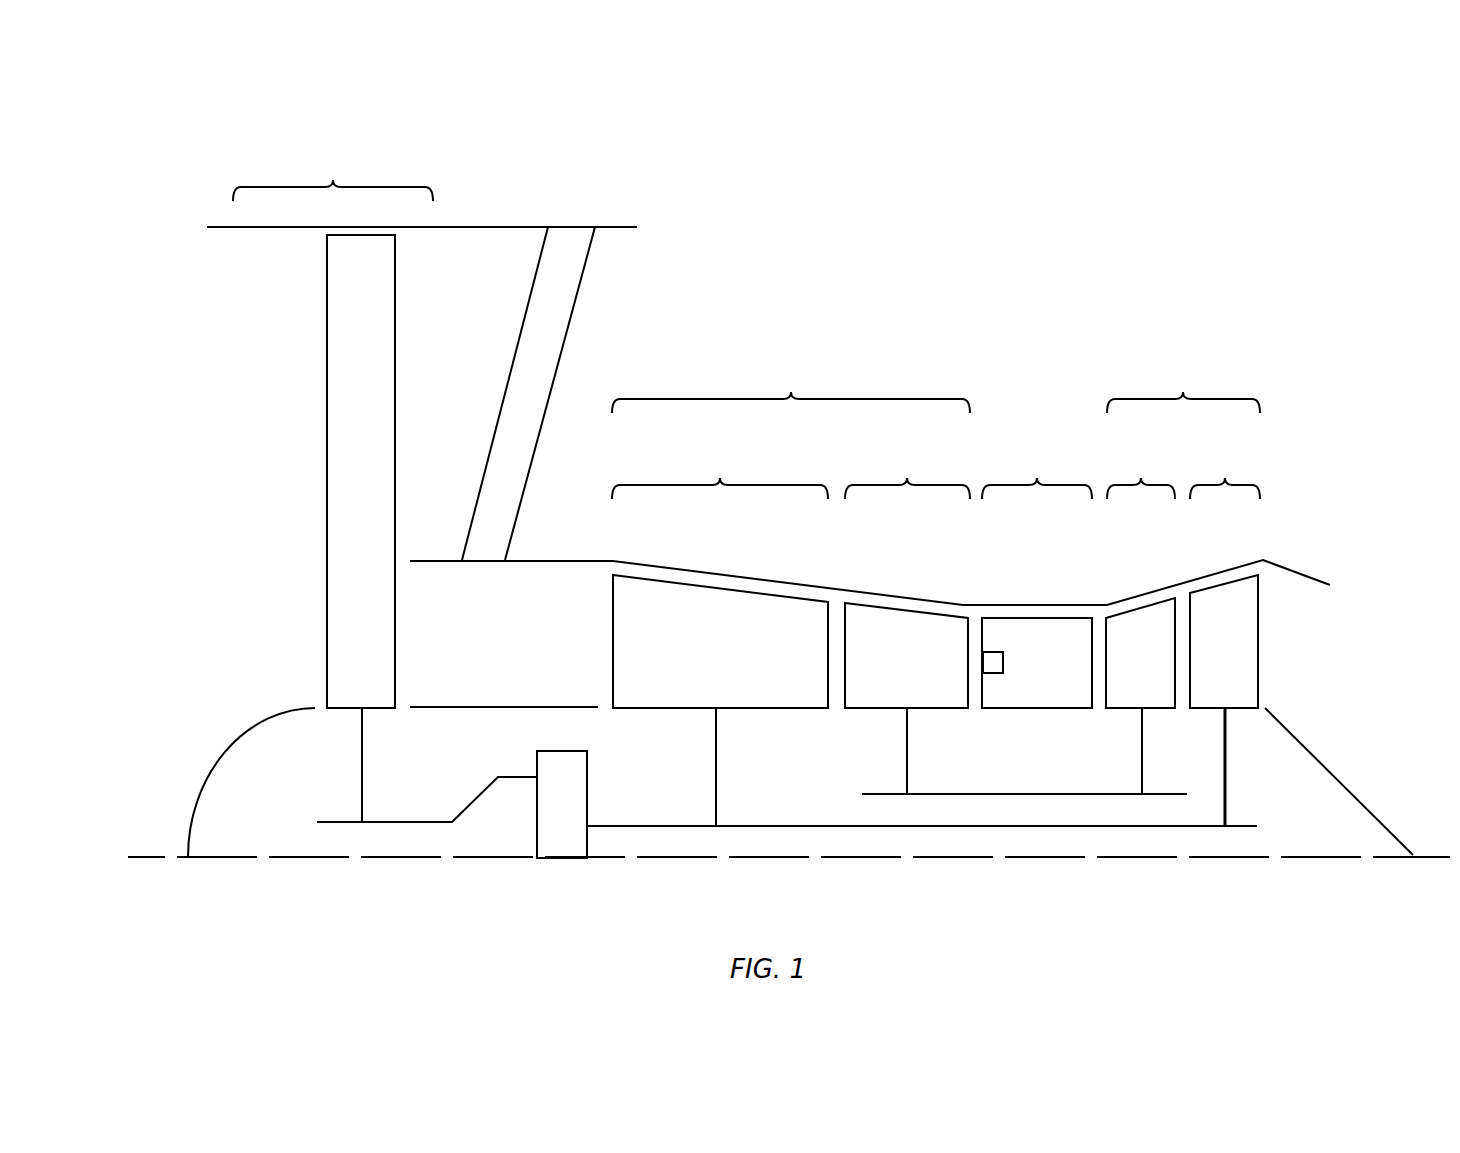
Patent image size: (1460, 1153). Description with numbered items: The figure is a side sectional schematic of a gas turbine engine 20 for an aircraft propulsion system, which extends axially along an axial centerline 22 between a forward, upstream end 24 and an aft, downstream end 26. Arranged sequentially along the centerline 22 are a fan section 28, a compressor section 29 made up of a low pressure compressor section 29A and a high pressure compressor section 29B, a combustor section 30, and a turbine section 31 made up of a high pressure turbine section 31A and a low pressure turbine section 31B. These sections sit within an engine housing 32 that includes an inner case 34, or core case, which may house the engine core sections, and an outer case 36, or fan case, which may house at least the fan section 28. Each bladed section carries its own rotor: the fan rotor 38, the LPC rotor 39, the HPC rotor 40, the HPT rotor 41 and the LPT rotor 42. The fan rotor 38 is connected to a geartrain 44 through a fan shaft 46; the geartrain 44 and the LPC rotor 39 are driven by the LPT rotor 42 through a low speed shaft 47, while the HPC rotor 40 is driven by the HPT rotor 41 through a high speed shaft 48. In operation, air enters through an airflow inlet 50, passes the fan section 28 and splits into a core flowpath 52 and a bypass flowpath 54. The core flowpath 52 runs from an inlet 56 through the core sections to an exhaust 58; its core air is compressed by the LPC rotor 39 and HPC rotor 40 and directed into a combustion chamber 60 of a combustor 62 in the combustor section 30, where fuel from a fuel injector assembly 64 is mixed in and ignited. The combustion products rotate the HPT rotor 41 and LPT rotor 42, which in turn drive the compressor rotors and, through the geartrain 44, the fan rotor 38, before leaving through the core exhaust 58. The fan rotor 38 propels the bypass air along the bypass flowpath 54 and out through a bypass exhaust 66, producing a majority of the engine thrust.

The gas turbine engine 20 is at (155, 143).
The axial centerline 22 is at (142, 858).
The forward, upstream end 24 is at (207, 227).
The aft, downstream end 26 is at (1413, 855).
The fan section 28 is at (333, 175).
The compressor section 29 is at (791, 386).
The low pressure compressor section 29A is at (720, 472).
The high pressure compressor section 29B is at (907, 472).
The combustor section 30 is at (1037, 472).
The turbine section 31 is at (1183, 386).
The high pressure turbine section 31A is at (1141, 472).
The low pressure turbine section 31B is at (1225, 472).
The engine housing 32 is at (667, 242).
The inner case 34 is at (572, 537).
The outer case 36 is at (530, 218).
The fan rotor 38 is at (343, 473).
The LPC rotor 39 is at (699, 658).
The HPC rotor 40 is at (892, 672).
The HPT rotor 41 is at (1126, 673).
The LPT rotor 42 is at (1211, 663).
The geartrain 44 is at (547, 820).
The fan shaft 46 is at (405, 823).
The low speed shaft 47 is at (1168, 827).
The high speed shaft 48 is at (1037, 793).
The airflow inlet 50 is at (202, 422).
The core flowpath 52 is at (469, 657).
The bypass flowpath 54 is at (470, 383).
The inlet 56 is at (420, 640).
The exhaust 58 is at (1322, 663).
The combustion chamber 60 is at (1031, 678).
The combustor 62 is at (1077, 605).
The fuel injector assembly 64 is at (995, 652).
The exhaust 66 is at (627, 305).